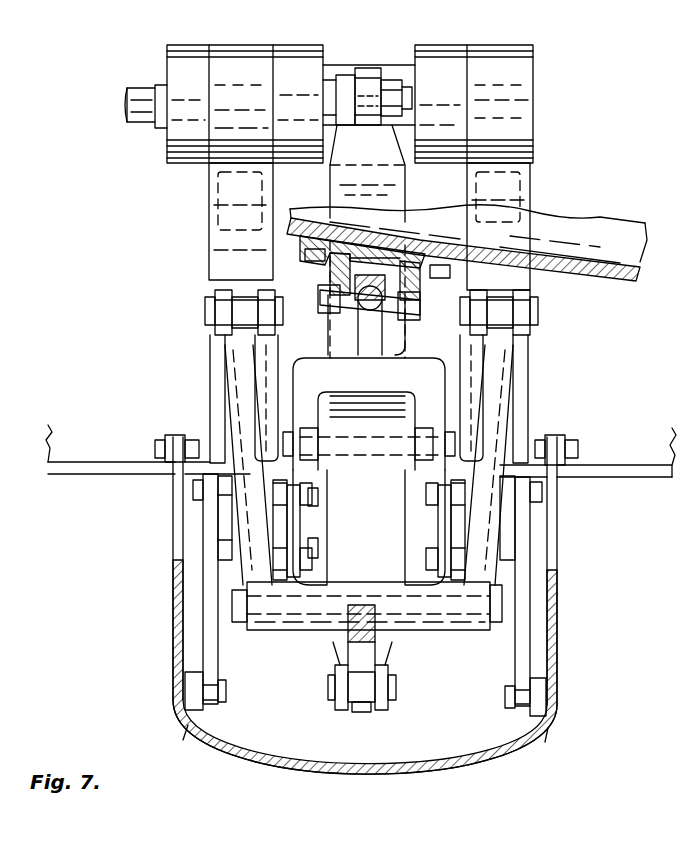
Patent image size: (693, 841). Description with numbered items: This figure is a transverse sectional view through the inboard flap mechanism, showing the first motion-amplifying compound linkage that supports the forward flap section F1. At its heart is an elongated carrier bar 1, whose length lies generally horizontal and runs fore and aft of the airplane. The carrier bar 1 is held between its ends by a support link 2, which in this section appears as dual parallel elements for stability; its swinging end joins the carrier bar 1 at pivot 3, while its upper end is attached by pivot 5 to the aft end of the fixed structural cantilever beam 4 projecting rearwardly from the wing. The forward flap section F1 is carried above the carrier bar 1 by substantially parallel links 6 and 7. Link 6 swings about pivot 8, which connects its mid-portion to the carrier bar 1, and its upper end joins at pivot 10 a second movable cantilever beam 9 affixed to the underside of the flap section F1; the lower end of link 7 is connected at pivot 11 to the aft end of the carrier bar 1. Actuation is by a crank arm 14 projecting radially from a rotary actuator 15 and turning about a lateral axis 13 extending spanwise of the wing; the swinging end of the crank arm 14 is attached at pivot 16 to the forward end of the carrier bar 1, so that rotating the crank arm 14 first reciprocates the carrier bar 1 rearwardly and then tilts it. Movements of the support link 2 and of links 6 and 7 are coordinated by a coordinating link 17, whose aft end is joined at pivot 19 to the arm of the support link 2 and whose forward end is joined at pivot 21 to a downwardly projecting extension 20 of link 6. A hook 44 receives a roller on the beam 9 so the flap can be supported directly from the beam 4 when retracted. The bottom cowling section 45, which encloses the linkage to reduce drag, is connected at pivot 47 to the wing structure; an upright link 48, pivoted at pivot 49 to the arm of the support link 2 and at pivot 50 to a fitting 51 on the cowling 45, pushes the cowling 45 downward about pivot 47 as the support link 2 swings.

The carrier bar 1 is at (395, 642).
The support link 2 is at (238, 372).
The pivot 3 is at (505, 602).
The fixed structural cantilever beam 4 is at (240, 250).
The pivot 5 is at (207, 310).
The link 6 is at (385, 378).
The link 7 is at (348, 630).
The pivot 8 is at (470, 412).
The second movable cantilever beam 9 is at (340, 270).
The pivot 10 is at (400, 303).
The pivot 11 is at (352, 710).
The lateral axis 13 is at (385, 193).
The crank arm 14 is at (372, 70).
The rotary actuator 15 is at (288, 60).
The pivot 16 is at (398, 92).
The coordinating link 17 is at (290, 518).
The pivot 19 is at (318, 548).
The downwardly projecting extension 20 is at (233, 512).
The pivot 21 is at (318, 500).
The hook 44 is at (272, 343).
The bottom cowling section 45 is at (425, 776).
The pivot 47 is at (158, 450).
The upright link 48 is at (210, 590).
The pivot 49 is at (192, 494).
The pivot 50 is at (224, 688).
The fitting 51 is at (193, 732).
The forward flap section F1 is at (640, 257).